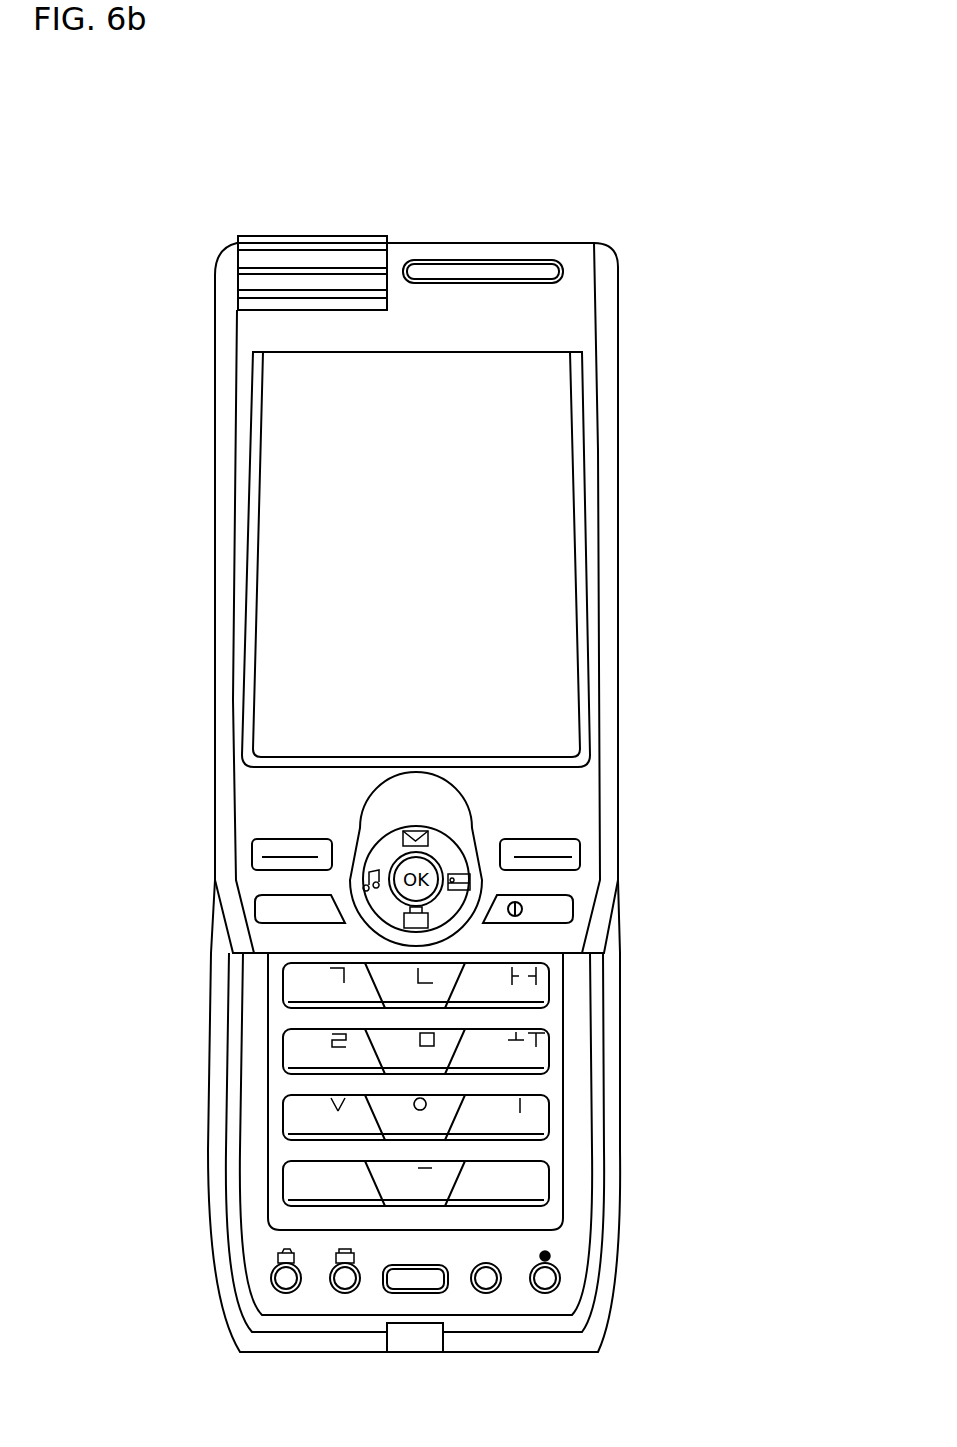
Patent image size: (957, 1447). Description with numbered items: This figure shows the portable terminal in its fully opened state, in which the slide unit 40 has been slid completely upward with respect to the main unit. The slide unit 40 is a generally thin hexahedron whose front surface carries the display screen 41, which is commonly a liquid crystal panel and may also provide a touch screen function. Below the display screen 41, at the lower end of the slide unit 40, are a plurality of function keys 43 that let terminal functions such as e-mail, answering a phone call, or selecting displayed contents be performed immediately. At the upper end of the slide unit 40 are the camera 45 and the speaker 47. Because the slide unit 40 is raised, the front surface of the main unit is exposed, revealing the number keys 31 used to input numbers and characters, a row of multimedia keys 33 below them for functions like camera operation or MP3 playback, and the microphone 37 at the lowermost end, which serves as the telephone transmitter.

The slide unit 40 is at (607, 447).
The display screen 41 is at (325, 600).
The function keys 43 is at (286, 853).
The camera 45 is at (293, 281).
The speaker 47 is at (441, 275).
The number keys 31 is at (527, 1053).
The multimedia keys 33 is at (553, 1272).
The microphone 37 is at (427, 1332).